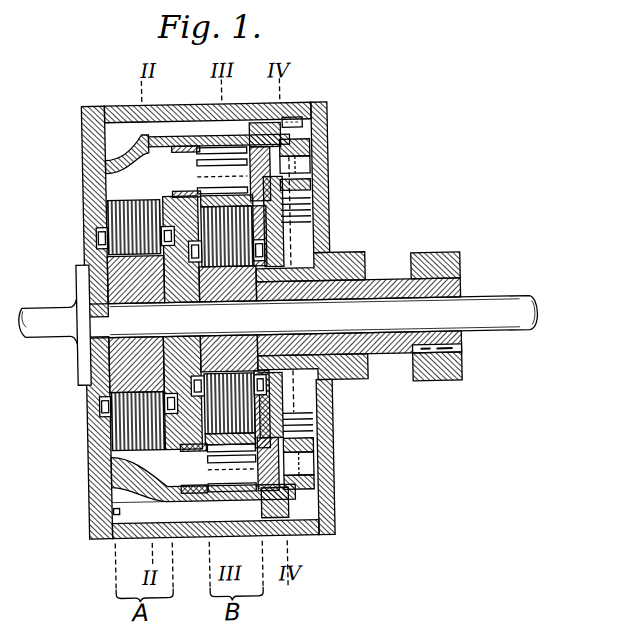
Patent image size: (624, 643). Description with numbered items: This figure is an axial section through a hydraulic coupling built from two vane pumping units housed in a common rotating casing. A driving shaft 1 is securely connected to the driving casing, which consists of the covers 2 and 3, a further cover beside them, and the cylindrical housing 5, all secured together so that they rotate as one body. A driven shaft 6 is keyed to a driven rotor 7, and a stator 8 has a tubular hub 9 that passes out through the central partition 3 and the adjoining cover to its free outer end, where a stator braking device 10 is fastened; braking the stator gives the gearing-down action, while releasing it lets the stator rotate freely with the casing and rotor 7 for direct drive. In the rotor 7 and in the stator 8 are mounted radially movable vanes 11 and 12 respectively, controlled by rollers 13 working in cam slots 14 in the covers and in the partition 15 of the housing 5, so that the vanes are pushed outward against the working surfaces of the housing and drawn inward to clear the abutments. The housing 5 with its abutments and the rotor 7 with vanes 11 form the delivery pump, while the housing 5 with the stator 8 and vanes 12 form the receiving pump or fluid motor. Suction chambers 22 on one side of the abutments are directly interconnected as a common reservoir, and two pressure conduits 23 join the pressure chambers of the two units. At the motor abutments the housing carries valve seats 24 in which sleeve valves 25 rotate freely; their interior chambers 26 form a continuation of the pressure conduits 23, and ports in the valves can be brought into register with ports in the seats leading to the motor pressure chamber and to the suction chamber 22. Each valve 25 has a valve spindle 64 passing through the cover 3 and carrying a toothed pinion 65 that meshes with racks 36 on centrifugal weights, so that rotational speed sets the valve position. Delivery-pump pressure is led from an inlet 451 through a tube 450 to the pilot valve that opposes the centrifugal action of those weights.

The driving shaft 1 is at (44, 331).
The cover 2 is at (85, 142).
The cover 3 is at (291, 117).
The cylindrical housing 5 is at (314, 107).
The driven shaft 6 is at (489, 311).
The driven rotor 7 is at (78, 267).
The stator 8 is at (320, 262).
The tubular hub 9 is at (385, 288).
The stator braking device 10 is at (425, 256).
The vanes 11 is at (136, 325).
The vanes 12 is at (228, 320).
The rollers 13 is at (98, 400).
The cam slots 14 is at (98, 405).
The partition 15 is at (180, 348).
The suction chambers 22 is at (150, 124).
The pressure conduits 23 is at (175, 134).
The valve seats 24 is at (268, 128).
The sleeve valves 25 is at (233, 134).
The interior chambers 26 is at (170, 462).
The racks 36 is at (302, 190).
The valve spindle 64 is at (302, 165).
The toothed pinion 65 is at (302, 147).
The tube 450 is at (332, 246).
The inlet 451 is at (125, 160).